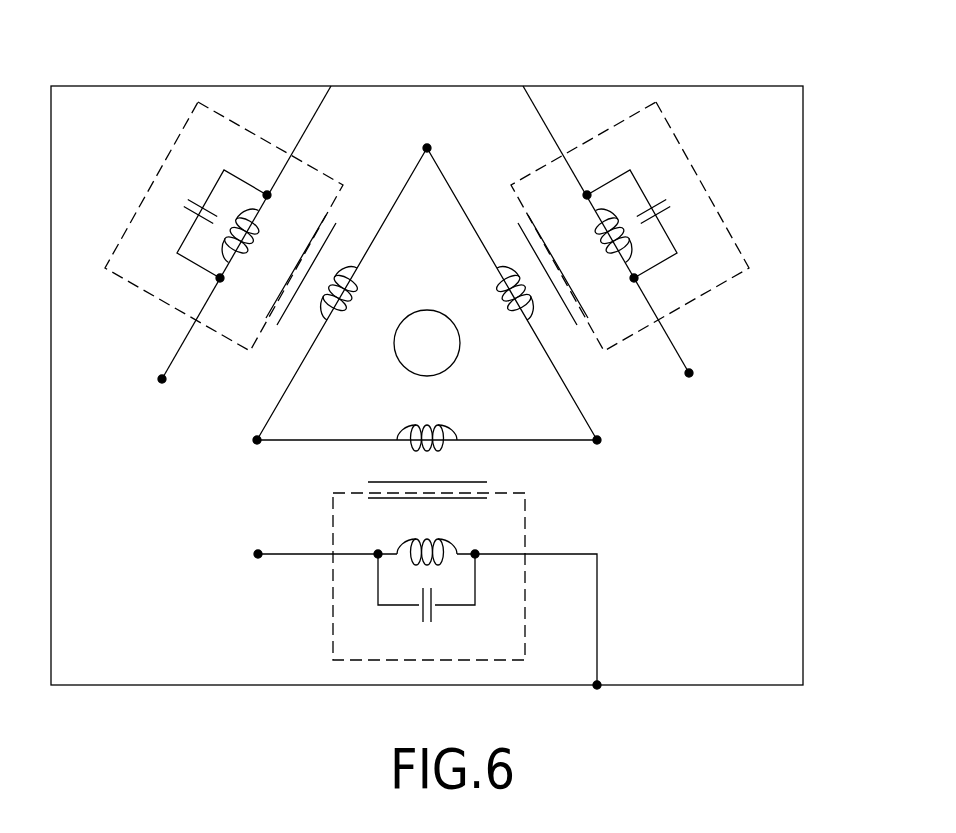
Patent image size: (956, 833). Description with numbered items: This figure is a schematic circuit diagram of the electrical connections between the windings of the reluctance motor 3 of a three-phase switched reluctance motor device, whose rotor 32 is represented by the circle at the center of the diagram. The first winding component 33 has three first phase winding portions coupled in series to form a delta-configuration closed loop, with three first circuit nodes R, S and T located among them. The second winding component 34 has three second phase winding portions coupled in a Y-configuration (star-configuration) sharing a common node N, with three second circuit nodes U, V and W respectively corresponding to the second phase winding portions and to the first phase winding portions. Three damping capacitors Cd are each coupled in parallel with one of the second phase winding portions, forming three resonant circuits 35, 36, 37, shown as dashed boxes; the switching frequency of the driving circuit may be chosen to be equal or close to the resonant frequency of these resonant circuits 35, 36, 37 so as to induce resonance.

The reluctance motor 3 is at (725, 72).
The rotor 32 is at (443, 357).
The first winding component 33 is at (452, 160).
The second winding component 34 is at (702, 333).
The resonant circuit 35 is at (167, 160).
The resonant circuit 36 is at (525, 513).
The resonant circuit 37 is at (683, 152).